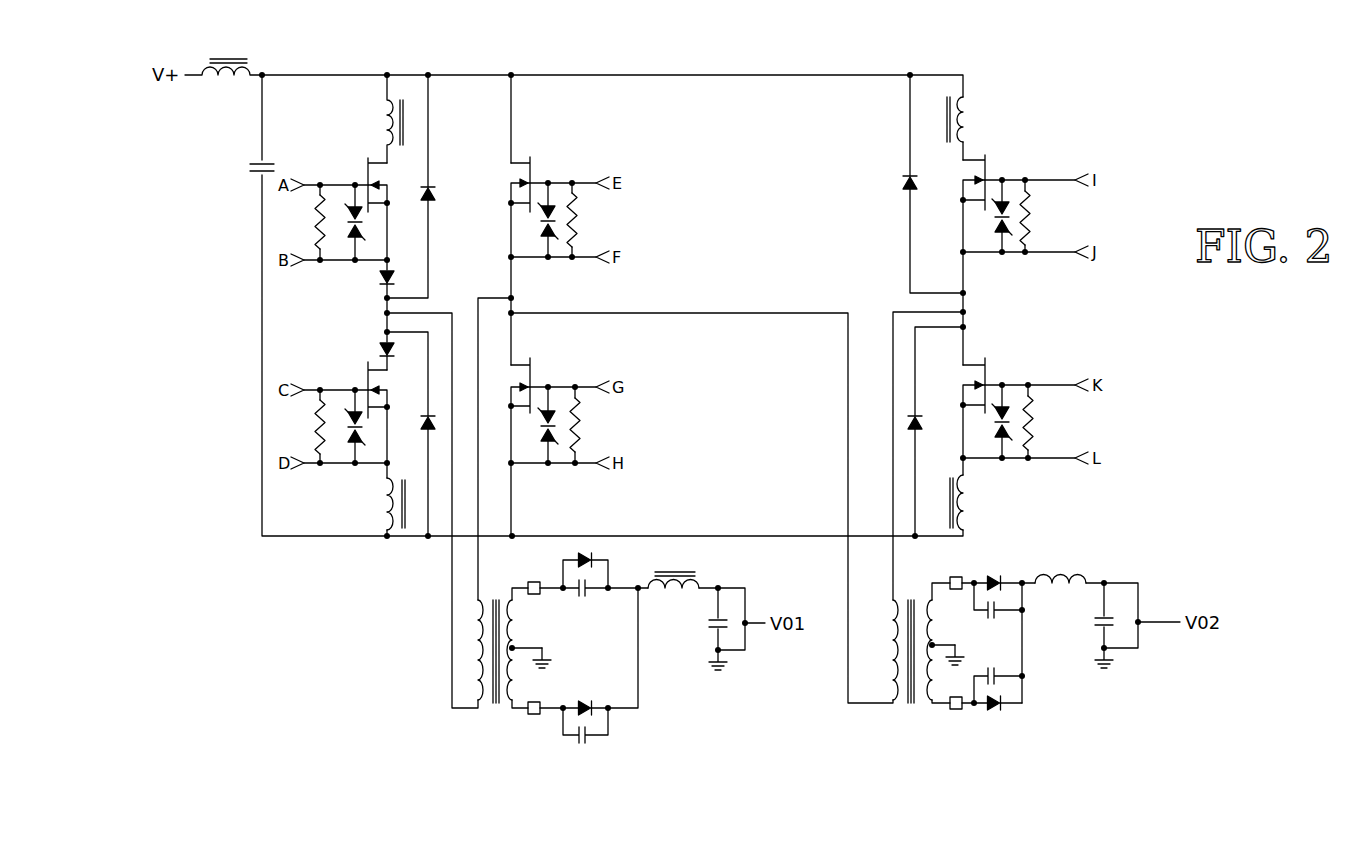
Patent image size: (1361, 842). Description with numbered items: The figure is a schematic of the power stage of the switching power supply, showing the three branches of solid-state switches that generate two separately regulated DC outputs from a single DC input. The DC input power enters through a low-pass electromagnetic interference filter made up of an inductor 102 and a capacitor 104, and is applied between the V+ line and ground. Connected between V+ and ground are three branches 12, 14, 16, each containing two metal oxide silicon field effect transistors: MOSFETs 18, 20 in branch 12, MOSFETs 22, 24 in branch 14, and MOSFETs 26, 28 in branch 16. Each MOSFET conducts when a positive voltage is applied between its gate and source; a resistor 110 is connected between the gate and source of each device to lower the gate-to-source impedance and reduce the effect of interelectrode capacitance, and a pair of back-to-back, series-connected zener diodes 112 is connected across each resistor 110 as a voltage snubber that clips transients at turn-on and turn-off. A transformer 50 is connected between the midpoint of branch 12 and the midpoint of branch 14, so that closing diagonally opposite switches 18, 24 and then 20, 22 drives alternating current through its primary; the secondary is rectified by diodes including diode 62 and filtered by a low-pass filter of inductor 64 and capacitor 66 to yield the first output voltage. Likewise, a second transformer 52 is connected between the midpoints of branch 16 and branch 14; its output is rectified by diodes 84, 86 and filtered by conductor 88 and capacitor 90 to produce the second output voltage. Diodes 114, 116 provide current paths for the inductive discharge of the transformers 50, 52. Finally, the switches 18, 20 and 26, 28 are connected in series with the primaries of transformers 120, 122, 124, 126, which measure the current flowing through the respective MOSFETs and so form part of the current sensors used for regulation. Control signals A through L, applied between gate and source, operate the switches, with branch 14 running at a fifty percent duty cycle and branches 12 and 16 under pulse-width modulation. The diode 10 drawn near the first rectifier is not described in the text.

The rectifier diode 10 is at (591, 557).
The branch 12 is at (442, 183).
The branch 14 is at (564, 156).
The branch 16 is at (1028, 139).
The solid-state switch 18 is at (366, 163).
The solid-state switch 20 is at (366, 363).
The solid-state switch 22 is at (532, 160).
The solid-state switch 24 is at (532, 367).
The solid-state switch 26 is at (986, 166).
The solid-state switch 28 is at (987, 366).
The transformer 50 is at (481, 692).
The transformer 52 is at (899, 692).
The diode 62 is at (584, 706).
The inductor 64 is at (672, 590).
The capacitor 66 is at (713, 631).
The diode 84 is at (992, 578).
The diode 86 is at (992, 711).
The conductor 88 is at (1064, 576).
The capacitor 90 is at (1100, 629).
The inductor 102 is at (258, 73).
The capacitor 104 is at (254, 162).
The resistor 110 is at (315, 220).
The zener diode 112 is at (362, 233).
The diode 114 is at (382, 340).
The diode 116 is at (434, 206).
The transformer 120 is at (383, 111).
The transformer 122 is at (385, 500).
The transformer 124 is at (967, 108).
The transformer 126 is at (968, 500).